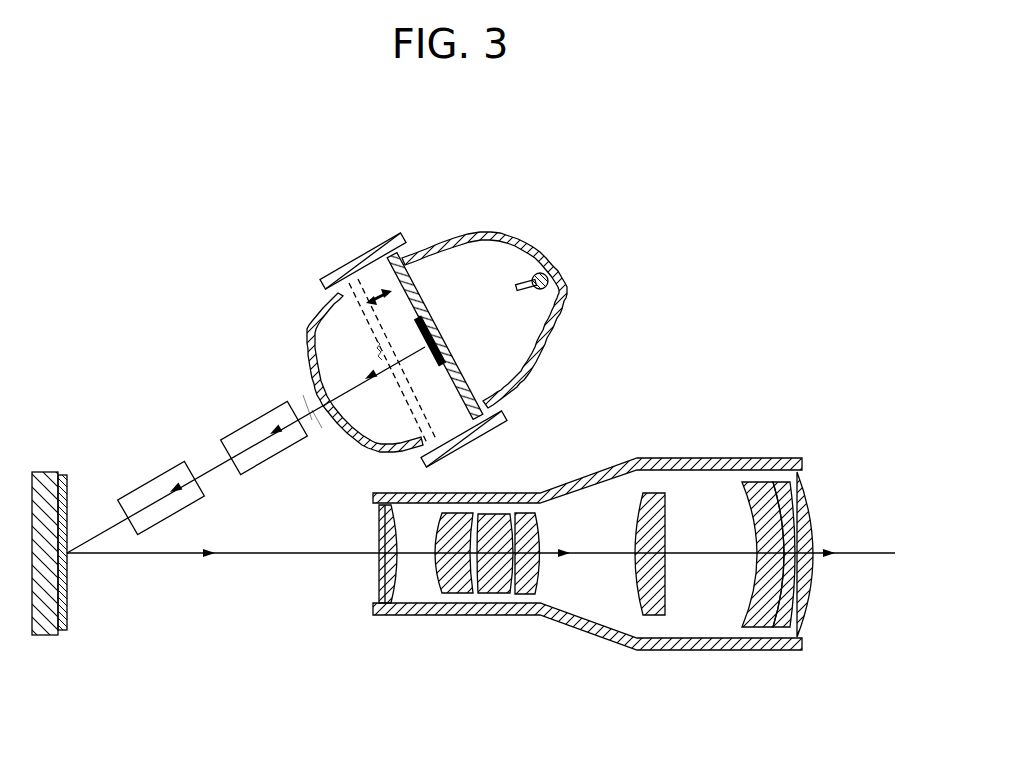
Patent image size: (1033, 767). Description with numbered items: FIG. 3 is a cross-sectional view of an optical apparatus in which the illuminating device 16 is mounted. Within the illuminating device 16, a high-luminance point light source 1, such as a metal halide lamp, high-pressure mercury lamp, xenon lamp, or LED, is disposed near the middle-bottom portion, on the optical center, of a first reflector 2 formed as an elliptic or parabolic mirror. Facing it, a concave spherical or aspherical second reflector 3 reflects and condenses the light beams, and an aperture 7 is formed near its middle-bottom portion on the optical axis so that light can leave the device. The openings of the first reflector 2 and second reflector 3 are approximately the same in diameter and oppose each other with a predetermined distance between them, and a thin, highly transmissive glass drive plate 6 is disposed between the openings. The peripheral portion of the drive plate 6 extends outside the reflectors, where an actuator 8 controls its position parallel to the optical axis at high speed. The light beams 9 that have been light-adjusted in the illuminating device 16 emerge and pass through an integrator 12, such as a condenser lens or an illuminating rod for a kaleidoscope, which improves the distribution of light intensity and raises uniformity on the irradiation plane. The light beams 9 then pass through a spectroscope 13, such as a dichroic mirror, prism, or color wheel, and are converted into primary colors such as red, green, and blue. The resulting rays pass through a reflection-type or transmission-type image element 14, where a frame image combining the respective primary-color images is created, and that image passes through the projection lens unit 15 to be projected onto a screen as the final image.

The light source 1 is at (531, 273).
The first reflector 2 is at (557, 333).
The second reflector 3 is at (346, 438).
The drive plate 6 is at (468, 380).
The aperture 7 is at (319, 418).
The actuator 8 is at (357, 258).
The light beams 9 is at (308, 408).
The integrator 12 is at (245, 437).
The spectroscope 13 is at (150, 494).
The image element 14 is at (47, 600).
The projection lens unit 15 is at (701, 652).
The illuminating device 16 is at (460, 337).